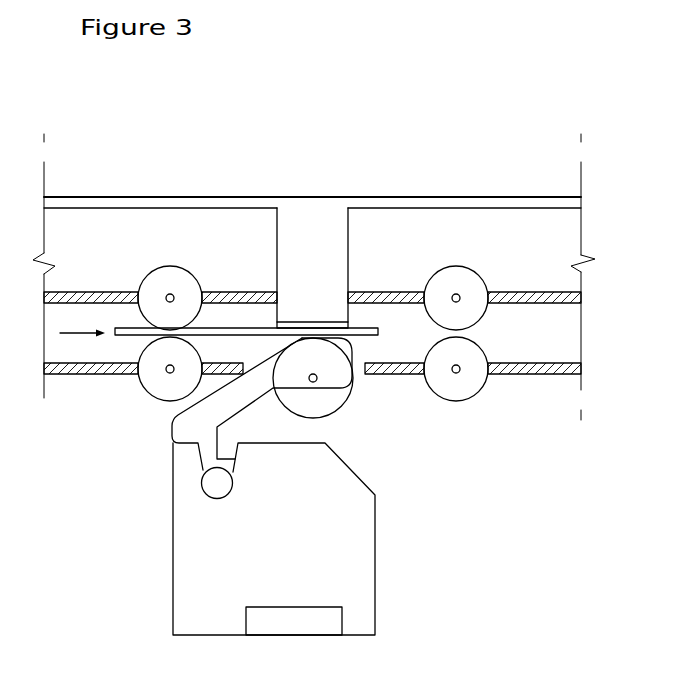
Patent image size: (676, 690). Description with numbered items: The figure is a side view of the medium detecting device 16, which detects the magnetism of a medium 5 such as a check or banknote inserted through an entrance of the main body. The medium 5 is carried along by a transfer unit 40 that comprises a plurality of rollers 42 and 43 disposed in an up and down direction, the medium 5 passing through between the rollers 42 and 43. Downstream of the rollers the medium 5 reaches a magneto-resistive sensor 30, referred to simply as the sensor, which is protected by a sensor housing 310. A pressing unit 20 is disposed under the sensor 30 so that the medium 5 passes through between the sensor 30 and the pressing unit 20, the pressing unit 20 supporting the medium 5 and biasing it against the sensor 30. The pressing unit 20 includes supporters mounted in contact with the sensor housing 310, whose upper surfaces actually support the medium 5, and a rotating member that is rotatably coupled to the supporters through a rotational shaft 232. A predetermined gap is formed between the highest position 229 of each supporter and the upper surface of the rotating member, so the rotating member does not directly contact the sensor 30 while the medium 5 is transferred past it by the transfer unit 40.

The medium detecting device 16 is at (152, 108).
The transfer unit 40 is at (83, 284).
The roller 42 is at (156, 274).
The roller 43 is at (156, 391).
The medium 5 is at (127, 337).
The sensor housing 310 is at (348, 243).
The magneto-resistive sensor 30 is at (350, 323).
The highest position of supporter 229 is at (312, 340).
The rotational shaft 232 is at (313, 384).
The pressing unit 20 is at (163, 566).